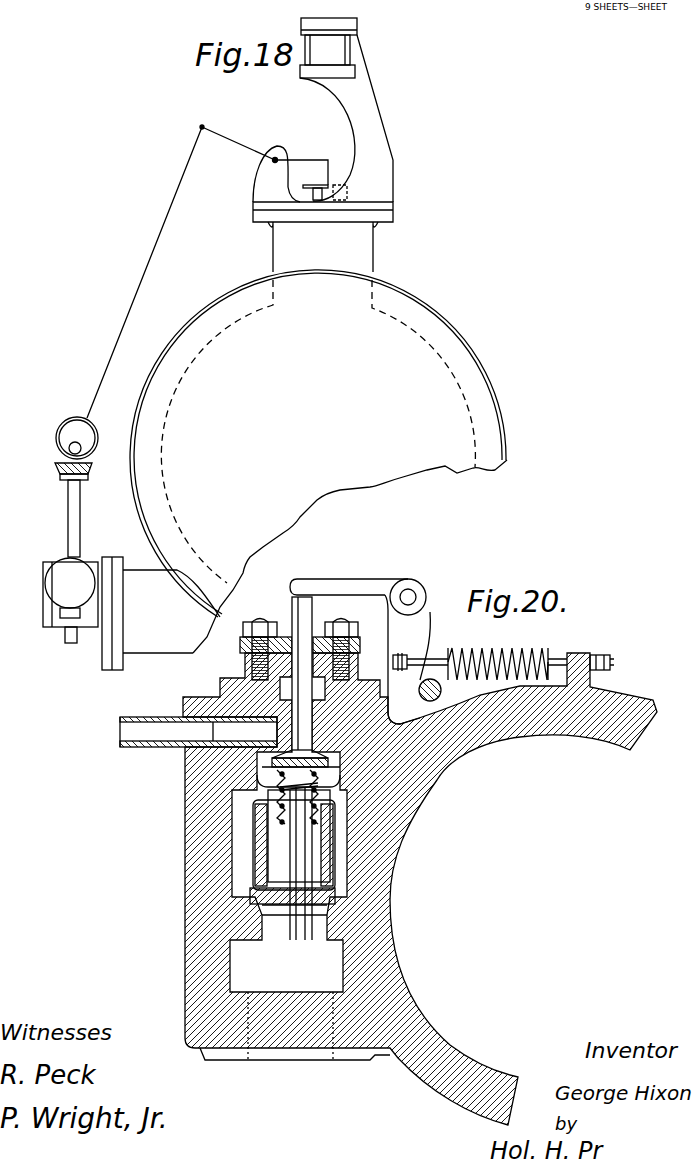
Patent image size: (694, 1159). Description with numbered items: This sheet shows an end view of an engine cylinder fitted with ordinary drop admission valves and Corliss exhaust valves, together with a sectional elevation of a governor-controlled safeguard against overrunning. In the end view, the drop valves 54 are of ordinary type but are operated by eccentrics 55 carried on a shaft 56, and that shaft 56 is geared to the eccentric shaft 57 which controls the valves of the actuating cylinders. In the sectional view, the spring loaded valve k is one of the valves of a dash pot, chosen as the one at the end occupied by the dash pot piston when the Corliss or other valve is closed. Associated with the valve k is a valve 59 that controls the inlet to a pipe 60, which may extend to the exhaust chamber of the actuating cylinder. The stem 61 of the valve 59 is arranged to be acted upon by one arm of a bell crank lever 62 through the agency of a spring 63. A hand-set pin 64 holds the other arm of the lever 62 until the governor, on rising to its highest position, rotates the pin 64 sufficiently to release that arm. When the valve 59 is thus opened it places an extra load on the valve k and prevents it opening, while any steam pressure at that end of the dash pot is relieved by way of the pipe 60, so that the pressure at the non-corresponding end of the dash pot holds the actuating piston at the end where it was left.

In FIG. 18, the drop valves 54 is at (340, 104).
In FIG. 18, the eccentrics 55 is at (72, 427).
In FIG. 18, the shaft 56 is at (80, 451).
In FIG. 18, the eccentric shaft 57 is at (75, 513).
In FIG. 20, the valve 59 is at (347, 792).
In FIG. 20, the pipe 60 is at (150, 720).
In FIG. 20, the stem 61 is at (297, 617).
In FIG. 20, the bell crank lever 62 is at (340, 592).
In FIG. 20, the spring 63 is at (537, 652).
In FIG. 20, the hand-set pin 64 is at (427, 693).
In FIG. 20, the spring loaded valve k is at (305, 847).